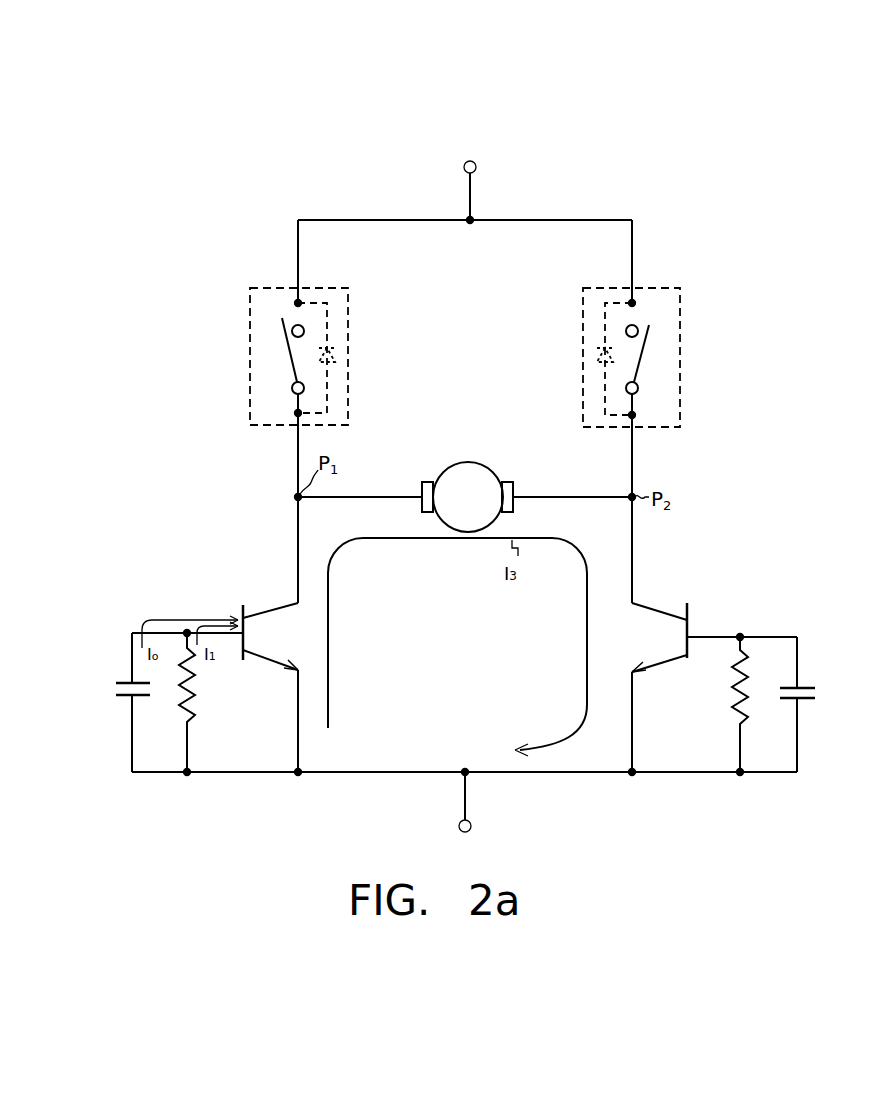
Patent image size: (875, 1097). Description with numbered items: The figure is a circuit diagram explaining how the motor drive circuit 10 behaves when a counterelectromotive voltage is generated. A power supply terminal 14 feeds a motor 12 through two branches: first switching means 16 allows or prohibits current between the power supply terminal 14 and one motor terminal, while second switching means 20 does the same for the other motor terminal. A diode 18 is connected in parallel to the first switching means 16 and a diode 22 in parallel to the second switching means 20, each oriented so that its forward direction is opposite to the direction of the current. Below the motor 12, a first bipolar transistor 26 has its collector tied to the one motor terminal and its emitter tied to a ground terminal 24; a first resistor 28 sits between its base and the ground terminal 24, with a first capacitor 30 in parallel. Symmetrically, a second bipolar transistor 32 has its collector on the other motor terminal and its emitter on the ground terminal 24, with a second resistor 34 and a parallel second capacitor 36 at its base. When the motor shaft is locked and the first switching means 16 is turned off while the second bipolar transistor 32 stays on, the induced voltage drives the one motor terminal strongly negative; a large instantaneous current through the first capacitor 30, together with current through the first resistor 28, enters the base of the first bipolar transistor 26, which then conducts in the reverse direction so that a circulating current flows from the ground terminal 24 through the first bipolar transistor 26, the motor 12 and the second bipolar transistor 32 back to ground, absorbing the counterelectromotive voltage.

The motor drive circuit 10 is at (590, 118).
The motor 12 is at (474, 462).
The power supply terminal 14 is at (477, 164).
The first switching means 16 is at (248, 332).
The diode 18 is at (329, 388).
The second switching means 20 is at (683, 300).
The diode 22 is at (600, 392).
The ground terminal 24 is at (472, 826).
The first bipolar transistor 26 is at (242, 612).
The first resistor 28 is at (190, 718).
The first capacitor 30 is at (120, 680).
The second bipolar transistor 32 is at (690, 616).
The second resistor 34 is at (735, 725).
The second capacitor 36 is at (800, 686).